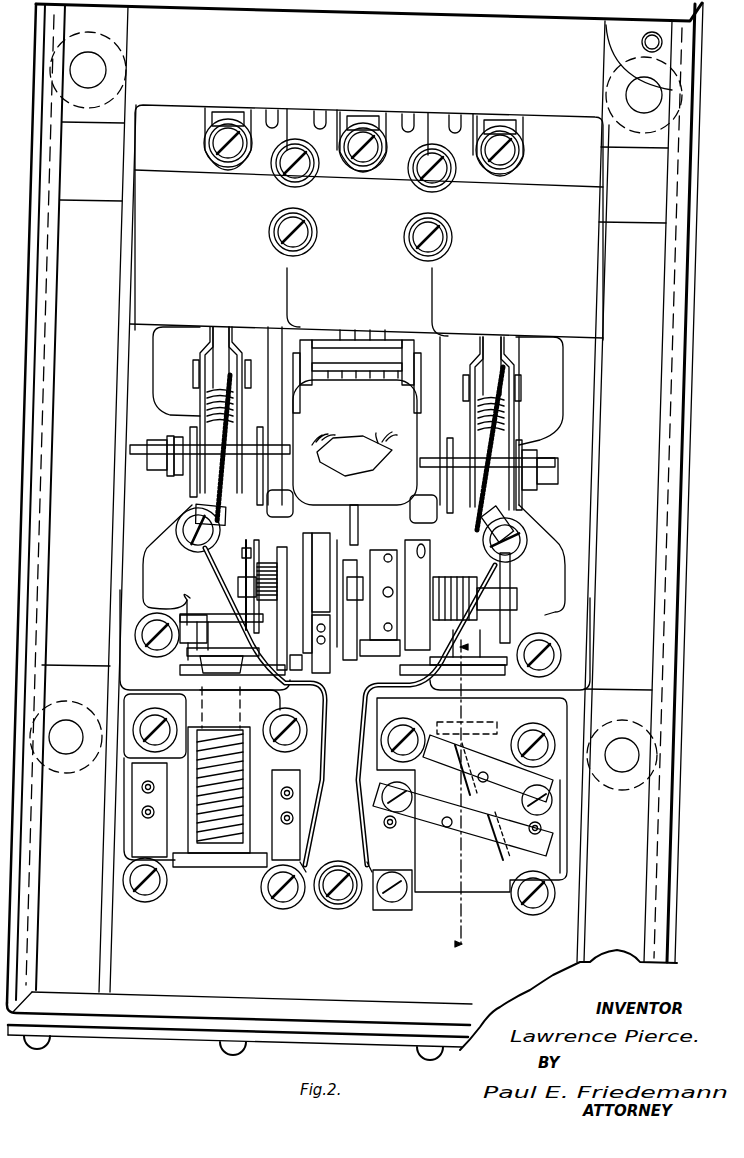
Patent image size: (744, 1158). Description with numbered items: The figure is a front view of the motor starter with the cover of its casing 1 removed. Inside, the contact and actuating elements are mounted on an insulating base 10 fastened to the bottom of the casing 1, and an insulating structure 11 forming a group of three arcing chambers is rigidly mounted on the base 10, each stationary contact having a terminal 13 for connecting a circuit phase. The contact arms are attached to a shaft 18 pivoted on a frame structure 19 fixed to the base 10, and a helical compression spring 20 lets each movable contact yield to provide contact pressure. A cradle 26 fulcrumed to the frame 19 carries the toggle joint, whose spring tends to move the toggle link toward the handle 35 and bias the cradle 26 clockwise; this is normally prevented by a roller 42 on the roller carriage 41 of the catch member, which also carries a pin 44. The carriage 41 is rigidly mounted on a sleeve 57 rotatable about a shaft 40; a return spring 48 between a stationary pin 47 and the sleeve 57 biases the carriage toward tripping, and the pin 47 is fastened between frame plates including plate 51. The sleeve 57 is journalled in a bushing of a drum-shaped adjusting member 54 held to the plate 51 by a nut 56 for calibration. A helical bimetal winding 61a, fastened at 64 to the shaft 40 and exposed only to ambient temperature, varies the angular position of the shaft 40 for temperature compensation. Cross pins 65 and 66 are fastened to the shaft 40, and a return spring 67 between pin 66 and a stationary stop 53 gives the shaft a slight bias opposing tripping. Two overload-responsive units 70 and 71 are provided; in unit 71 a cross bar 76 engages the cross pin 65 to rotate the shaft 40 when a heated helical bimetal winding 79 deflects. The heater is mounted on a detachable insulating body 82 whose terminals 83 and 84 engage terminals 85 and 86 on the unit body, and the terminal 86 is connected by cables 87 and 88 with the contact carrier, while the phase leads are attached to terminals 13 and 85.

The casing 1 is at (684, 281).
The insulating support or base 10 is at (592, 398).
The insulating structure 11 is at (586, 294).
The terminal 13 is at (226, 128).
The shaft 18 is at (422, 482).
The frame structure 19 is at (400, 352).
The helical compression spring 20 is at (210, 402).
The cradle 26 is at (358, 524).
The handle 35 is at (347, 438).
The shaft 40 is at (240, 586).
The roller carriage 41 is at (386, 630).
The roller 42 is at (398, 591).
The pin 44 is at (290, 632).
The stationary pin 47 is at (352, 668).
The return spring 48 is at (331, 588).
The plate 51 is at (408, 545).
The stationary stop 53 is at (247, 552).
The adjusting member 54 is at (432, 562).
The nut 56 is at (386, 635).
The sleeve 57 is at (330, 575).
The helical bimetal winding 61a is at (487, 598).
The fastening point 64 is at (300, 612).
The cross pin 65 is at (508, 578).
The cross pin 66 is at (258, 542).
The return spring 67 is at (268, 562).
The overload-responsive unit 70 is at (157, 696).
The overload-responsive unit 71 is at (583, 718).
The cross bar 76 is at (520, 636).
The helical bimetal winding 79 is at (222, 835).
The insulating body 82 is at (450, 882).
The terminal 83 is at (490, 768).
The terminal 84 is at (441, 847).
The terminal 85 is at (552, 915).
The terminal 86 is at (385, 905).
The cable 87 is at (355, 805).
The cable 88 is at (524, 512).